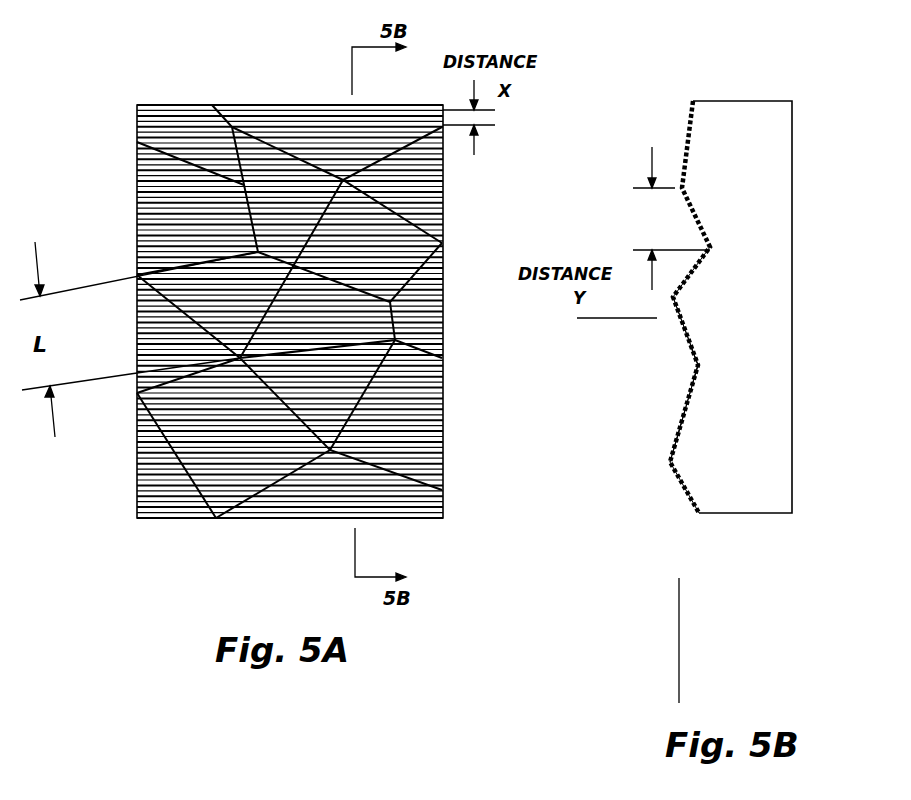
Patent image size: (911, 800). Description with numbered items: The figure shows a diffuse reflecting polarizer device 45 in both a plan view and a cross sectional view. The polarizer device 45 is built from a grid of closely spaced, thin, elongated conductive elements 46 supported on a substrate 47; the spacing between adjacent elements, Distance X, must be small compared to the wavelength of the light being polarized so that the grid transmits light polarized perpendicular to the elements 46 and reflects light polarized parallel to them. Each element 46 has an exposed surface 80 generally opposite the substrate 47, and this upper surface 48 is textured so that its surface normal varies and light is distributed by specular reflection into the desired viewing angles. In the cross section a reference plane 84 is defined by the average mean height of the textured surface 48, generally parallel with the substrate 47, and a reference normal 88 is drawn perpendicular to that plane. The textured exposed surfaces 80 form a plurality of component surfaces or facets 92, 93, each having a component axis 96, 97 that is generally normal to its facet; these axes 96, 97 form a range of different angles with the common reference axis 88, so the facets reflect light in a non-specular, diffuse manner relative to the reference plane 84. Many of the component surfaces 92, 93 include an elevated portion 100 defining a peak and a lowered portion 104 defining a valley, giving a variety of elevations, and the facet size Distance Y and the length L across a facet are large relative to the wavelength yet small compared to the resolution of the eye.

In FIG. 5A, the polarizer device 45 is at (133, 437).
In FIG. 5B, the polarizer device 45 is at (698, 515).
In FIG. 5A, the conductive elements 46 is at (243, 103).
In FIG. 5B, the conductive elements 46 is at (678, 490).
In FIG. 5B, the substrate 47 is at (737, 100).
In FIG. 5A, the upper surface 48 is at (247, 507).
In FIG. 5B, the upper surface 48 is at (670, 443).
In FIG. 5A, the exposed surface 80 is at (150, 520).
In FIG. 5B, the exposed surface 80 is at (680, 427).
In FIG. 5B, the reference plane 84 is at (678, 653).
In FIG. 5B, the reference normal 88 is at (610, 320).
In FIG. 5A, the component surface 92 is at (278, 332).
In FIG. 5B, the component surface 92 is at (695, 335).
In FIG. 5A, the component facet 93 is at (308, 407).
In FIG. 5B, the component facet 93 is at (690, 415).
In FIG. 5B, the component axis 96 is at (667, 345).
In FIG. 5B, the component axis 97 is at (665, 405).
In FIG. 5B, the elevated portion 100 is at (675, 297).
In FIG. 5B, the lowered portion 104 is at (700, 363).